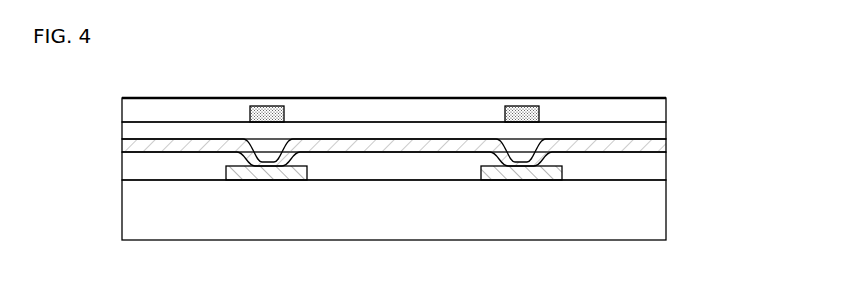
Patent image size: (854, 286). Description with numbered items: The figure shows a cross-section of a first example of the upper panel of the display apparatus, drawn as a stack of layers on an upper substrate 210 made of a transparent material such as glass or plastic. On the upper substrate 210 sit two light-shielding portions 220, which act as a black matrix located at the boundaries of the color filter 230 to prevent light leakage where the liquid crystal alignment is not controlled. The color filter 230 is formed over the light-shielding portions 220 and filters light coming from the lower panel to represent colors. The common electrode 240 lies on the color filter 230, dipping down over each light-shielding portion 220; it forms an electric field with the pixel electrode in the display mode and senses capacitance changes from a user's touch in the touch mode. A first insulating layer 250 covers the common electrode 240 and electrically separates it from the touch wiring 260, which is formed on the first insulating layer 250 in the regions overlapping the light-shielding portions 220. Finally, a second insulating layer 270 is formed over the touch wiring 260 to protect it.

The upper substrate 210 is at (667, 205).
The light-shielding portion 220 is at (538, 170).
The color filter 230 is at (667, 167).
The common electrode 240 is at (667, 147).
The first insulating layer 250 is at (667, 128).
The touch wiring 260 is at (525, 113).
The second insulating layer 270 is at (667, 105).